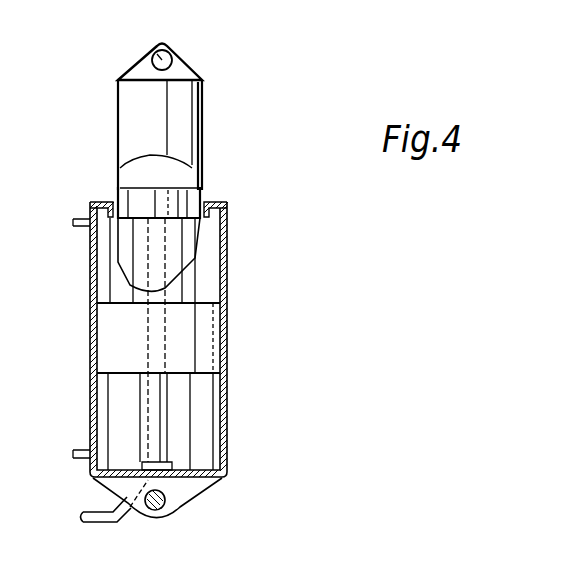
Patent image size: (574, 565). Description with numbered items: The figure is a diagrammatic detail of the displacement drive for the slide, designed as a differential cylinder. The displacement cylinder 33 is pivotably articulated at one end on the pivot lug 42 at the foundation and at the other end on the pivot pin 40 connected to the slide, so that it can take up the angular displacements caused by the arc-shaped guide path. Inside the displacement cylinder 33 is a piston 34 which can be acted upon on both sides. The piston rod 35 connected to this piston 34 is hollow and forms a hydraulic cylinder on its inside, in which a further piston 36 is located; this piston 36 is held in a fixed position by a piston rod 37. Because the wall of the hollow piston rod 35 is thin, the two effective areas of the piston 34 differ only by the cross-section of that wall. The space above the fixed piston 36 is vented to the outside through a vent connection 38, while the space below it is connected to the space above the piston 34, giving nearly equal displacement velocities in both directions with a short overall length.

The displacement cylinder 33 is at (227, 302).
The piston 34 is at (200, 342).
The piston rod 35 is at (188, 135).
The piston 36 is at (180, 205).
The piston rod 37 is at (160, 412).
The vent connection 38 is at (92, 522).
The pivot pin 40 is at (166, 505).
The pivot lug 42 is at (155, 48).